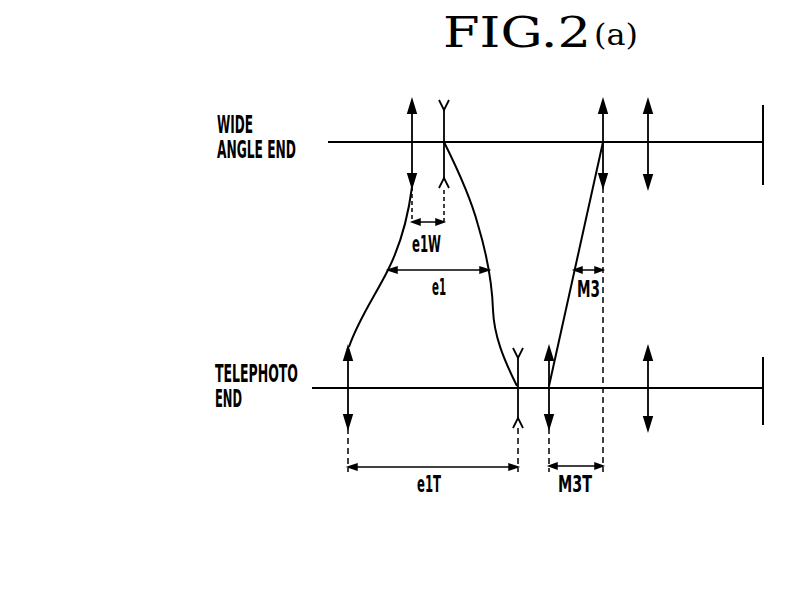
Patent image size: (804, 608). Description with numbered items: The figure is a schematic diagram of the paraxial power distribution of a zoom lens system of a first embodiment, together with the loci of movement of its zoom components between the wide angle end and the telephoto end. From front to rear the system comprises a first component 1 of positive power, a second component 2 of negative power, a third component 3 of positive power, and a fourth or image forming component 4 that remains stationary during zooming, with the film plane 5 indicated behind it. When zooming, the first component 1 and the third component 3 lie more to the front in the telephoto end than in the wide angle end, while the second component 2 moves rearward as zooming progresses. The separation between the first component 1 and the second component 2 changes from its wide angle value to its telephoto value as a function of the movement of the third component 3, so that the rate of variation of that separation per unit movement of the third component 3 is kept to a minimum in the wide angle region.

The first component 1 is at (413, 105).
The second component 2 is at (449, 105).
The third component 3 is at (604, 105).
The fourth or image forming component 4 is at (649, 105).
The film plane 5 is at (762, 112).